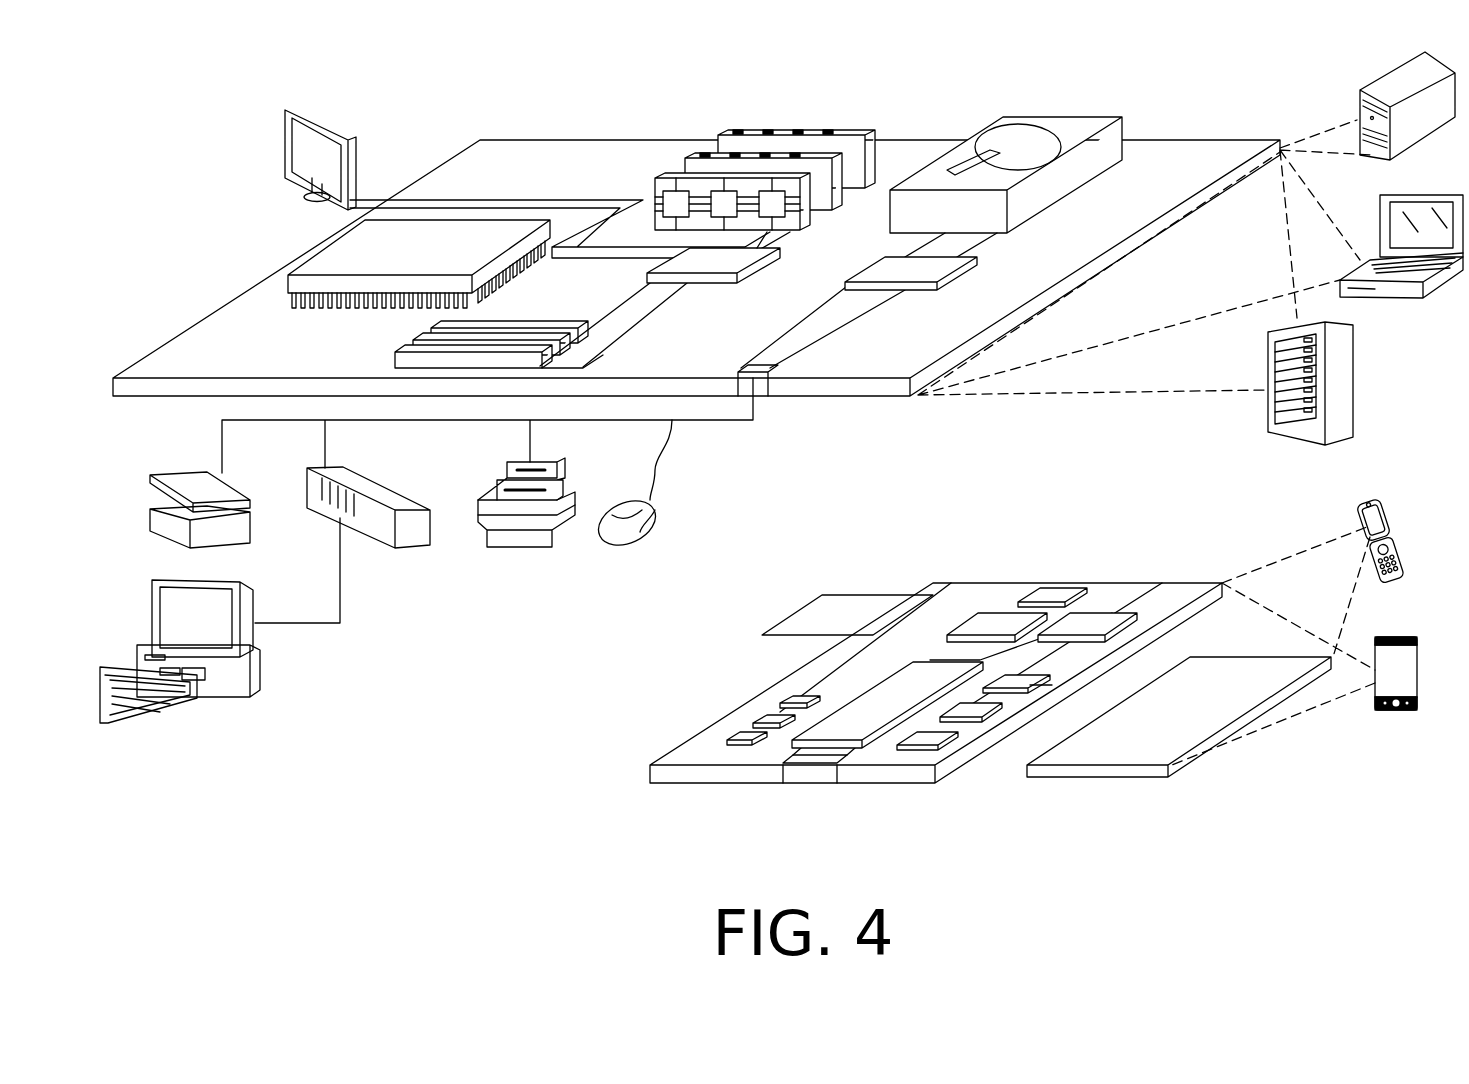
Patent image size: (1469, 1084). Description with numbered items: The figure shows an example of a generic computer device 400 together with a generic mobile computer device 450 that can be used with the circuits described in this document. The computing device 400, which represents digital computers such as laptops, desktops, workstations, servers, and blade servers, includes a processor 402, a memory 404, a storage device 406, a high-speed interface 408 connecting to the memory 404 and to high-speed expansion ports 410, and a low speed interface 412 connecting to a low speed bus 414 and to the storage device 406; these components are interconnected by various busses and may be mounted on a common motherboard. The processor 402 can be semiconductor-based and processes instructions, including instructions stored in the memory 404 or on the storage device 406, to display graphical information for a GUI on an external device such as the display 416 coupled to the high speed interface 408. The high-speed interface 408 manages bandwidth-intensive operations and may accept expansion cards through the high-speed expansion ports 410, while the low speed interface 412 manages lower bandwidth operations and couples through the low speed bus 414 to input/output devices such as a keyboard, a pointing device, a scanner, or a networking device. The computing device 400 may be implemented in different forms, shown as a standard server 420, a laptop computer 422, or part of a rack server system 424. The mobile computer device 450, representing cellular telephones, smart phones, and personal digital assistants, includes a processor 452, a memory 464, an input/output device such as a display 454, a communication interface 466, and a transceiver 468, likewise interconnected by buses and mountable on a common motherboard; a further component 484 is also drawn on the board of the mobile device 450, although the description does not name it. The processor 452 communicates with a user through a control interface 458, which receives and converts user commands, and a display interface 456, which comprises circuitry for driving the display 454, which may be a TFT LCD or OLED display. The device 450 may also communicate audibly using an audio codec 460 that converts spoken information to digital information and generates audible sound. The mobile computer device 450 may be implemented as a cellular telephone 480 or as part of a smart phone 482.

The computing device 400 is at (424, 82).
The processor 402 is at (316, 256).
The memory 404 is at (800, 134).
The storage device 406 is at (1050, 116).
The high-speed interface 408 is at (728, 265).
The high-speed expansion ports 410 is at (424, 339).
The low speed interface 412 is at (882, 265).
The low speed bus 414 is at (760, 365).
The display 416 is at (288, 108).
The standard server 420 is at (1380, 84).
The laptop computer 422 is at (1440, 194).
The rack server system 424 is at (1355, 380).
The mobile computer device 450 is at (637, 730).
The processor 452 is at (853, 710).
The display 454 is at (1218, 683).
The display interface 456 is at (950, 745).
The control interface 458 is at (975, 710).
The audio codec 460 is at (1020, 684).
The memory 464 is at (760, 712).
The communication interface 466 is at (992, 616).
The transceiver 468 is at (1092, 620).
The cellular telephone 480 is at (1053, 598).
The smart phone 482 is at (913, 595).
The battery / plate 484 is at (826, 595).